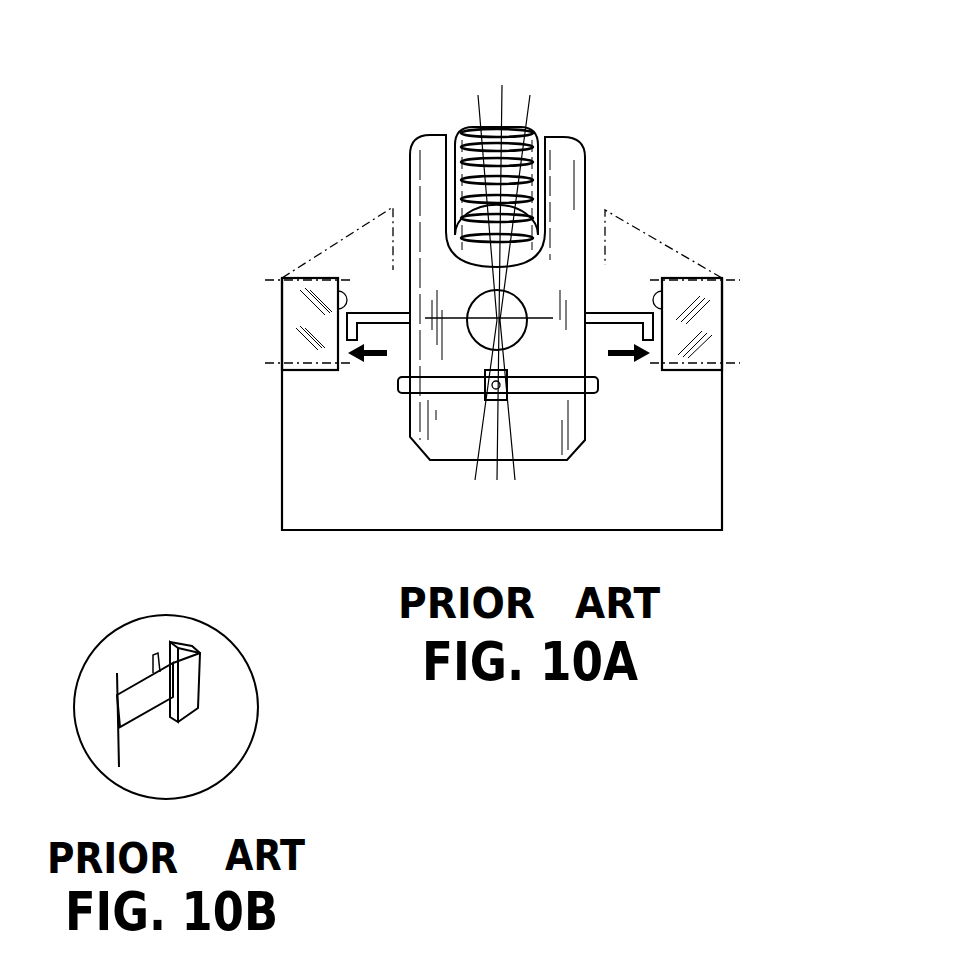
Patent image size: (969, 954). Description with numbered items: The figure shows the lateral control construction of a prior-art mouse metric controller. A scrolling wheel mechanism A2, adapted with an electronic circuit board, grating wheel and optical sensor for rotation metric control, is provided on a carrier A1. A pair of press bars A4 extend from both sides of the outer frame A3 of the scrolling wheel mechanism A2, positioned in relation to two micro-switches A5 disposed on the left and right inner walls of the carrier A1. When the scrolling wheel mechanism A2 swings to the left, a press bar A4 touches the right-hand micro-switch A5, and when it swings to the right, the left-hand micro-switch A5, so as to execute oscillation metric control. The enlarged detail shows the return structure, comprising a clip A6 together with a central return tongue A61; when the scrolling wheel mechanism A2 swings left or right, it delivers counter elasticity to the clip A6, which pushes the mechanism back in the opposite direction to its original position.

In FIG. 10A, the carrier A1 is at (700, 468).
In FIG. 10A, the scrolling wheel mechanism A2 is at (550, 124).
In FIG. 10A, the outer frame A3 is at (587, 281).
In FIG. 10A, the press bars A4 is at (375, 312).
In FIG. 10A, the micro-switches A5 is at (290, 313).
In FIG. 10B, the clip A6 is at (174, 643).
In FIG. 10B, the central return tongue A61 is at (143, 680).